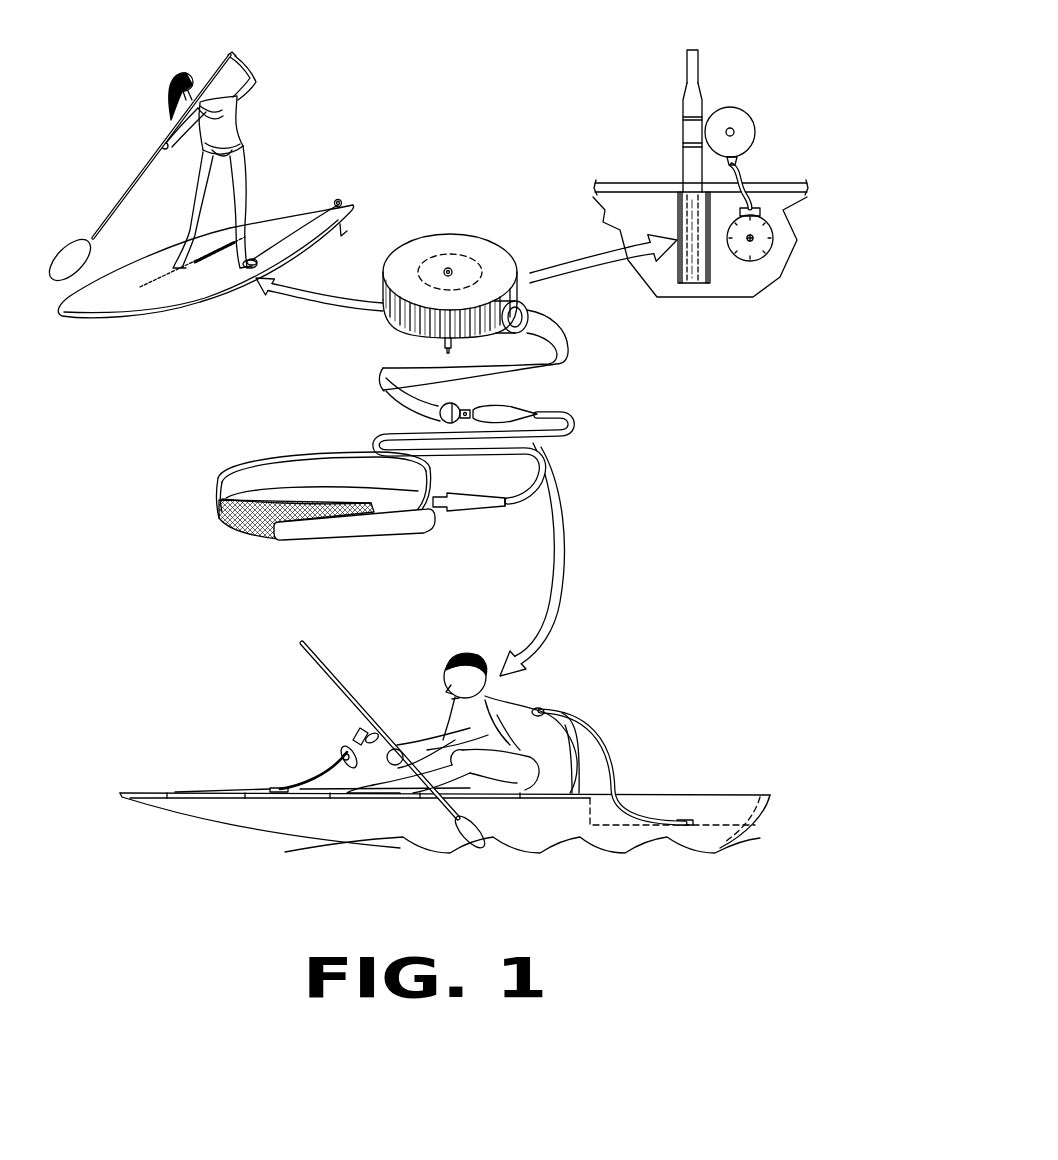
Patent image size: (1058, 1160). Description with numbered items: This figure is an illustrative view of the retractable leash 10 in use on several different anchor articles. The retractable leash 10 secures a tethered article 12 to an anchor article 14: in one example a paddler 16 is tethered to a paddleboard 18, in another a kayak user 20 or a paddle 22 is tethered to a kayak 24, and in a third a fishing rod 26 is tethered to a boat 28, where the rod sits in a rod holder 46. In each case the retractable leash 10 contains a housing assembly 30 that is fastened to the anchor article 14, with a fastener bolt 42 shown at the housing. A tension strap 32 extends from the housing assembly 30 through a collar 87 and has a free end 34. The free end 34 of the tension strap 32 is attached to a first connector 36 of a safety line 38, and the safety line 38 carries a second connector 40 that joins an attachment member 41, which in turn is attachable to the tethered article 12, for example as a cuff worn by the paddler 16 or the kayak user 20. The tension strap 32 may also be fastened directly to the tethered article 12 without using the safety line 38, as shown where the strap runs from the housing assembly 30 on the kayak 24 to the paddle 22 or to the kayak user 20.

The retractable leash 10 is at (295, 140).
The tethered article 12 is at (170, 80).
The anchor article 14 is at (120, 320).
The paddler 16 is at (243, 190).
The paddleboard 18 is at (177, 293).
The kayak user 20 is at (520, 698).
The paddle 22 is at (347, 702).
The kayak 24 is at (243, 825).
The fishing rod 26 is at (688, 100).
The boat 28 is at (623, 228).
The housing assembly 30 is at (345, 195).
The tension strap 32 is at (293, 223).
The free end of tension strap 34 is at (253, 237).
The first connector 36 is at (503, 413).
The safety line 38 is at (510, 510).
The second connector 40 is at (462, 507).
The attachment member 41 is at (253, 245).
The fastener bolt 42 is at (450, 270).
The rod holder 46 is at (695, 283).
The collar 87 is at (530, 302).